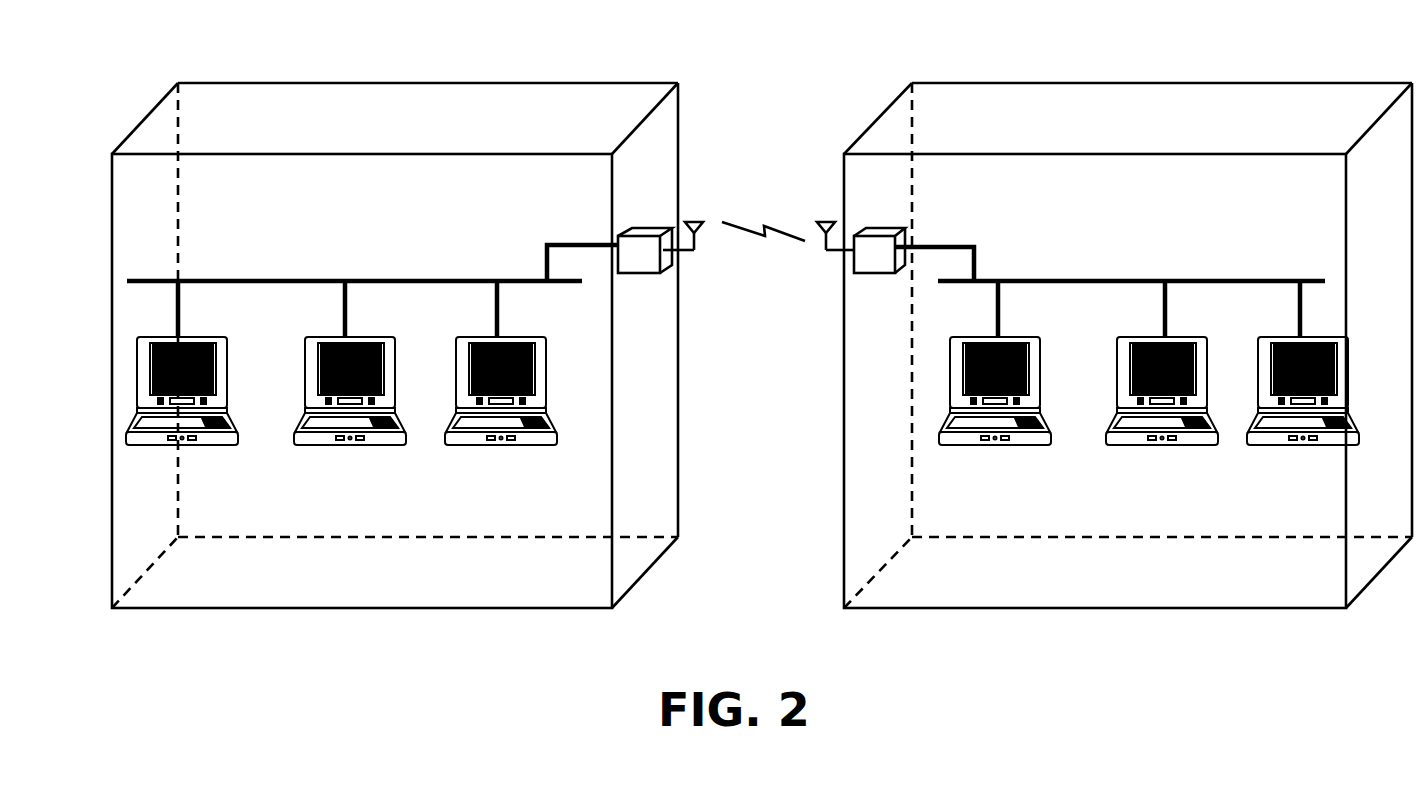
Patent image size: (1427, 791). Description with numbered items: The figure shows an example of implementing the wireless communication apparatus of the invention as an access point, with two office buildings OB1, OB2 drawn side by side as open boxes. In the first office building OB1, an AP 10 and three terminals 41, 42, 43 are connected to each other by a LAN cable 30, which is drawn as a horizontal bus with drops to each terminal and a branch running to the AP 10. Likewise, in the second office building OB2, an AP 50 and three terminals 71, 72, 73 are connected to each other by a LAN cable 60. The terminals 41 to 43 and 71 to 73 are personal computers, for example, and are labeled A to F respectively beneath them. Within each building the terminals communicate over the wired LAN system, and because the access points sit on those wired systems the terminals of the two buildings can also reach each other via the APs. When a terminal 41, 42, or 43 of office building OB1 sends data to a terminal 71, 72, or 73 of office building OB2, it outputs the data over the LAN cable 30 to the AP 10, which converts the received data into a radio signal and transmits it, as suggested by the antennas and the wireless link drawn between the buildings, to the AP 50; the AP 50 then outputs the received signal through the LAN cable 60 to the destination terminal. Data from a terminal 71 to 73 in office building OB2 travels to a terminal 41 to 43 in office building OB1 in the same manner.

The office building OB1 is at (292, 84).
The office building OB2 is at (1037, 84).
The AP 10 is at (648, 228).
The AP 50 is at (870, 228).
The LAN cable 30 is at (221, 278).
The LAN cable 60 is at (1020, 278).
The terminal 41 is at (203, 336).
The terminal 42 is at (366, 336).
The terminal 43 is at (519, 336).
The terminal 71 is at (987, 333).
The terminal 72 is at (1152, 333).
The terminal 73 is at (1289, 333).